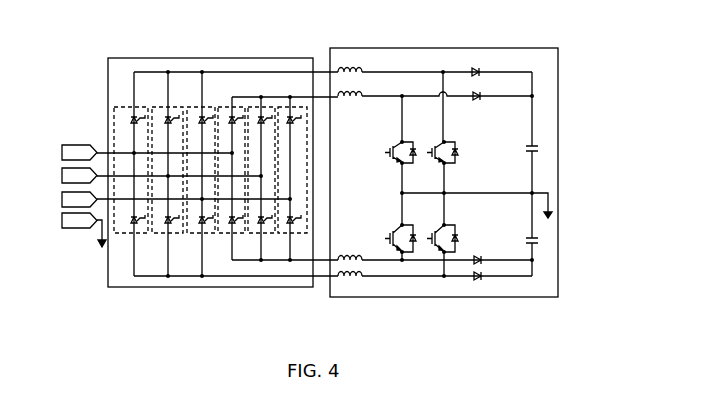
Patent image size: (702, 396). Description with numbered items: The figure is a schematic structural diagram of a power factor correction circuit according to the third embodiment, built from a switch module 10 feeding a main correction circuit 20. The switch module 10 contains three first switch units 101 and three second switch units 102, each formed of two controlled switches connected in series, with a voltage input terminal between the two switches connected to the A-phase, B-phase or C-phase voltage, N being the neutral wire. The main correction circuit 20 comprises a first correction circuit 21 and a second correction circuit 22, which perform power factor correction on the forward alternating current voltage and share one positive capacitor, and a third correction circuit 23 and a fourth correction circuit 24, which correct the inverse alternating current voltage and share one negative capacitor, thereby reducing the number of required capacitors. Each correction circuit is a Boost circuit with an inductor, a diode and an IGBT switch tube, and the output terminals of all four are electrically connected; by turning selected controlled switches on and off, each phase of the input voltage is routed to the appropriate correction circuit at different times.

The switch module 10 is at (198, 153).
The first switch unit 101 is at (193, 103).
The second switch unit 102 is at (297, 103).
The main correction circuit 20 is at (444, 170).
The first correction circuit 21 is at (418, 70).
The second correction circuit 22 is at (509, 93).
The third correction circuit 23 is at (508, 263).
The fourth correction circuit 24 is at (423, 278).